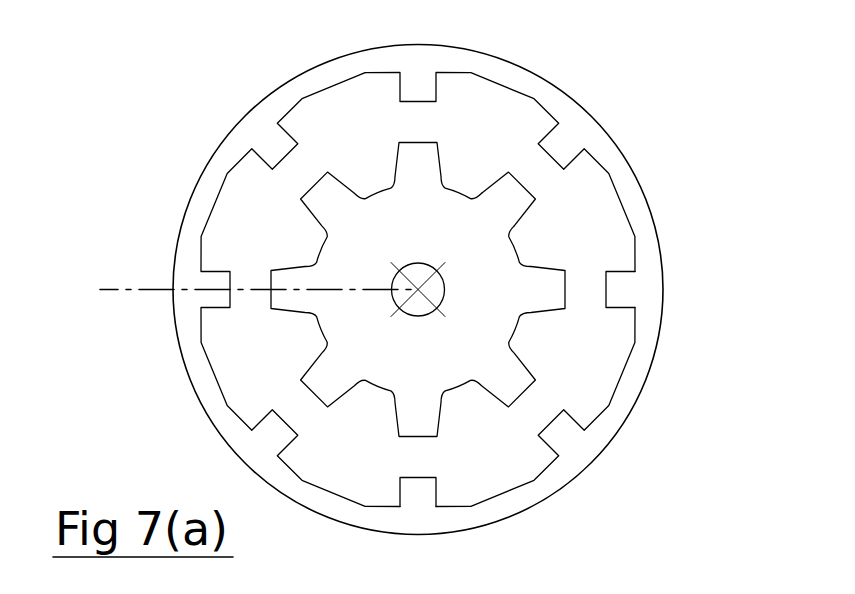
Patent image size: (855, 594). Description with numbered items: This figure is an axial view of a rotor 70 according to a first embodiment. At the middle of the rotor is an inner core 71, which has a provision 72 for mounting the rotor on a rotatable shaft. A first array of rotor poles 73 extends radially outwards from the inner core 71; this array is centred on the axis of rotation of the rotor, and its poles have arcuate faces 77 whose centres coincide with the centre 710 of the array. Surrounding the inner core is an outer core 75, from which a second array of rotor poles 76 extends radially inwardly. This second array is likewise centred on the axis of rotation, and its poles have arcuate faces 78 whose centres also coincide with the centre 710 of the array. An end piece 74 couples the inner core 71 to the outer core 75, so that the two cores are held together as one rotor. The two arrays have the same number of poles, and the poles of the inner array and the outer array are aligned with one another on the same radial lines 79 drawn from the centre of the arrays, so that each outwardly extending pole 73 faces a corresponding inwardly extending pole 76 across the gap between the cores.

The rotor 70 is at (590, 110).
The inner core 71 is at (370, 254).
The provision for mounting on a rotatable shaft 72 is at (422, 317).
The centre of the array 710 is at (418, 290).
The first array of rotor poles 73 is at (548, 293).
The end piece 74 is at (483, 457).
The outer core 75 is at (597, 438).
The second array of rotor poles 76 is at (617, 292).
The arcuate faces 77 is at (530, 193).
The arcuate faces 78 is at (410, 477).
The radial lines 79 is at (138, 291).